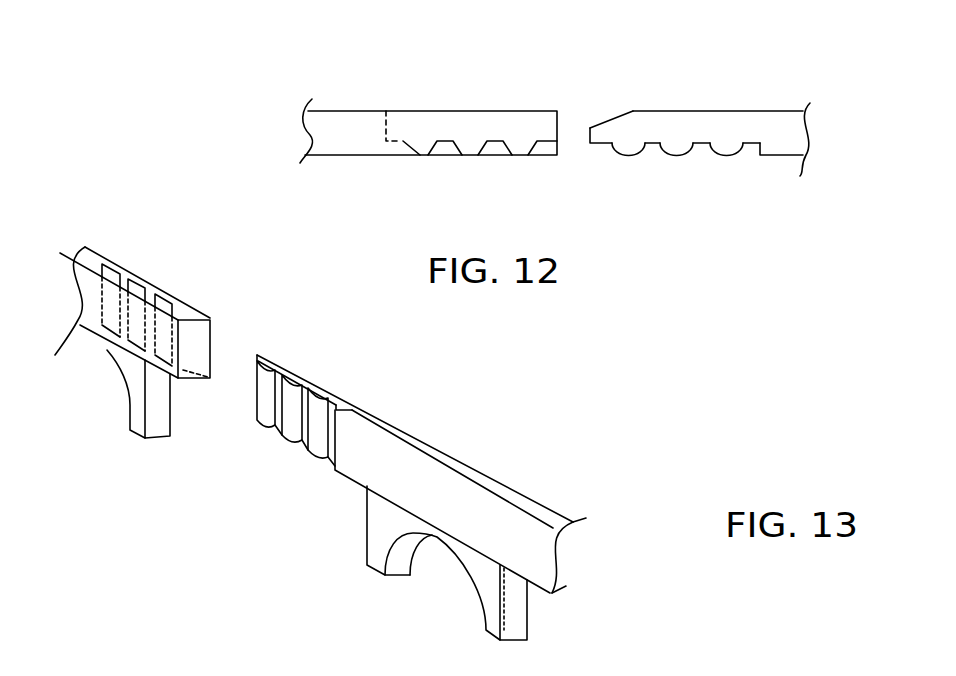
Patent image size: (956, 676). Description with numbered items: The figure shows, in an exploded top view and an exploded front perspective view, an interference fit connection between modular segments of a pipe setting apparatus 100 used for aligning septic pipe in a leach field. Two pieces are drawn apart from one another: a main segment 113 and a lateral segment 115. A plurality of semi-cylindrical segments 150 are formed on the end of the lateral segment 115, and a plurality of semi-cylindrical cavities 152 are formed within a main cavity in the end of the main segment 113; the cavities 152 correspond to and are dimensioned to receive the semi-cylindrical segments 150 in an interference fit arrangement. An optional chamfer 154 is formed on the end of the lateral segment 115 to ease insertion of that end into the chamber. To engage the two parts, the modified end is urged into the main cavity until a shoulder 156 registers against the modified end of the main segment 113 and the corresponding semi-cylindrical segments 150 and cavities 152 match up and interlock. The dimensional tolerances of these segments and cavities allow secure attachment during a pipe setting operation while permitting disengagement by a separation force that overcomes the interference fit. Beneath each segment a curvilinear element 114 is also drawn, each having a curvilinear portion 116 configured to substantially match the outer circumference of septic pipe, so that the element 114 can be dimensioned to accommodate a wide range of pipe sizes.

In FIG. 12, the pipe setting apparatus 100 is at (718, 47).
In FIG. 13, the pipe setting apparatus 100 is at (517, 393).
In FIG. 12, the main segment 113 is at (407, 111).
In FIG. 13, the main segment 113 is at (203, 315).
In FIG. 13, the curvilinear element 114 is at (140, 388).
In FIG. 12, the lateral segment 115 is at (710, 111).
In FIG. 13, the lateral segment 115 is at (500, 495).
In FIG. 13, the curvilinear portion 116 is at (108, 348).
In FIG. 12, the semi-cylindrical segments 150 is at (727, 155).
In FIG. 13, the semi-cylindrical segments 150 is at (320, 408).
In FIG. 12, the semi-cylindrical cavities 152 is at (523, 155).
In FIG. 13, the semi-cylindrical cavities 152 is at (163, 303).
In FIG. 12, the chamfer 154 is at (613, 119).
In FIG. 12, the shoulder 156 is at (747, 155).
In FIG. 13, the shoulder 156 is at (338, 407).